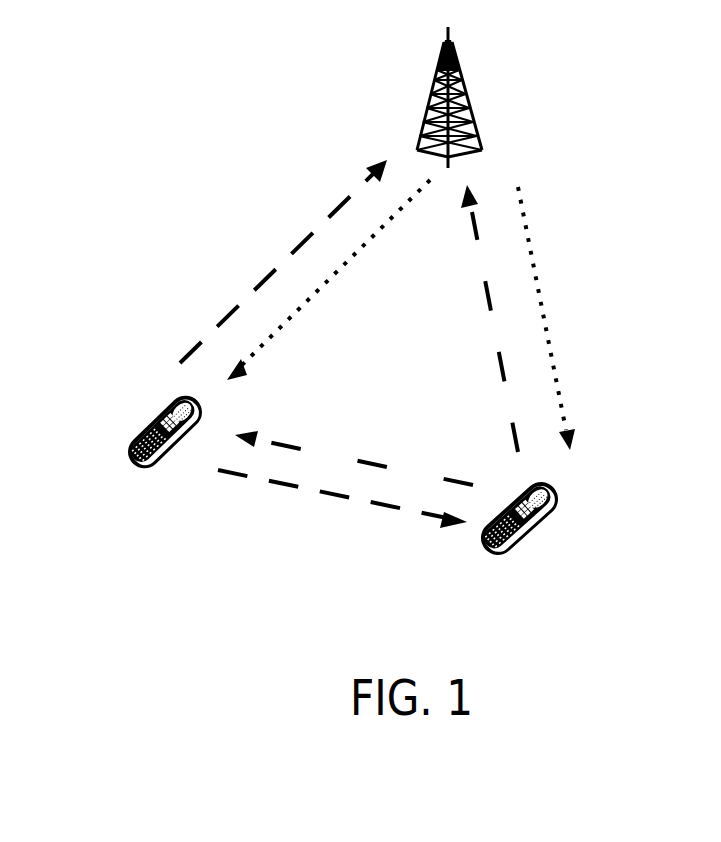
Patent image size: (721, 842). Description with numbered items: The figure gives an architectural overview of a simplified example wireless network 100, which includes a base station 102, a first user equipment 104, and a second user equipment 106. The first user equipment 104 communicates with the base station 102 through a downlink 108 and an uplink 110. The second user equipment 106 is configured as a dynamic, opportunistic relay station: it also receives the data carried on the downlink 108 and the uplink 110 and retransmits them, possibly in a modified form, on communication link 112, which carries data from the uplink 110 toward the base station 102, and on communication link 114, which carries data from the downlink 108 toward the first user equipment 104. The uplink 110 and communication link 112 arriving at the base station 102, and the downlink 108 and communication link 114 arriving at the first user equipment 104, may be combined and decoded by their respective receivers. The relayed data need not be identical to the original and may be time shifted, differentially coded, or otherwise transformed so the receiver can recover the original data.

The network 100 is at (222, 57).
The base station 102 is at (470, 120).
The first user equipment 104 is at (135, 462).
The second user equipment 106 is at (510, 555).
The downlink 108 is at (332, 278).
The uplink 110 is at (270, 273).
The communication link 112 is at (495, 360).
The communication link 114 is at (365, 462).